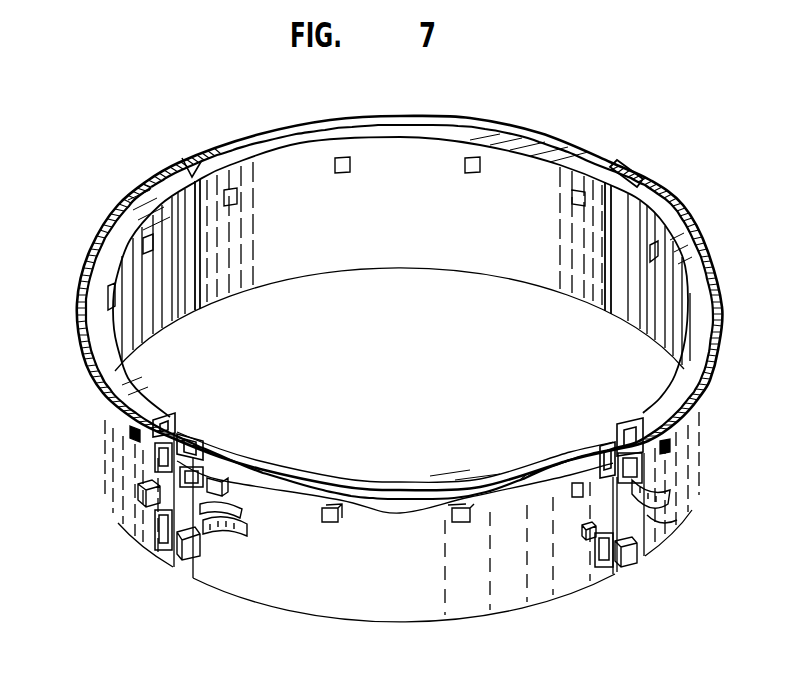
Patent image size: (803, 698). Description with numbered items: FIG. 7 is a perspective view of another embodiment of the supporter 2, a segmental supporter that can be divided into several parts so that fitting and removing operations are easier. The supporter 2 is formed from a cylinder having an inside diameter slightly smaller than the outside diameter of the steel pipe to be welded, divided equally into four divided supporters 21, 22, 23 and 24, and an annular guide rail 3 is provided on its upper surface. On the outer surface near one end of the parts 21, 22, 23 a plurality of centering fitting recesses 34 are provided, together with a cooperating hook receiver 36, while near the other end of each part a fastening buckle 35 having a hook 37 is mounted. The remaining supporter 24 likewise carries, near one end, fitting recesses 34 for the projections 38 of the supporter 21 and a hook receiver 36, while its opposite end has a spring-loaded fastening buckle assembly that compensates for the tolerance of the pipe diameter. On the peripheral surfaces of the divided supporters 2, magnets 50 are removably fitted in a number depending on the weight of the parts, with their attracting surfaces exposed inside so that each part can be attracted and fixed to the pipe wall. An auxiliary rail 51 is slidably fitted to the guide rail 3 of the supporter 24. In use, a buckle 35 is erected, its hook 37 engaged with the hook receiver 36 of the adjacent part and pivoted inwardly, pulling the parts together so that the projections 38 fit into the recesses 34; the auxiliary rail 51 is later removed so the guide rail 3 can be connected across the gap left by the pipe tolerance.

The supporter 2 is at (246, 122).
The annular guide rail 3 is at (317, 480).
The divided supporter 21 is at (118, 483).
The divided supporter 22 is at (444, 602).
The divided supporter 23 is at (688, 478).
The divided supporter 24 is at (338, 262).
The centering fitting recesses 34 is at (156, 456).
The fastening buckle 35 is at (222, 538).
The hook receiver 36 is at (141, 500).
The hook 37 is at (212, 510).
The projections 38 is at (186, 560).
The magnets 50 is at (238, 199).
The auxiliary rail 51 is at (626, 178).